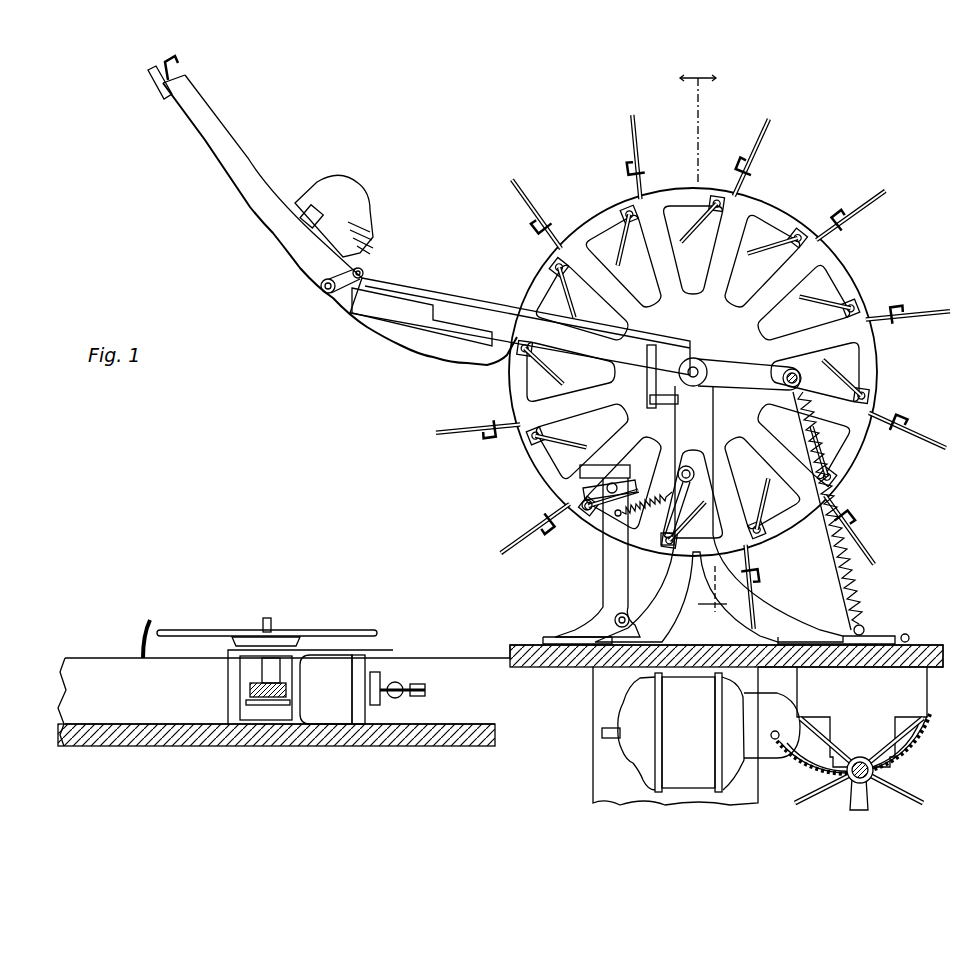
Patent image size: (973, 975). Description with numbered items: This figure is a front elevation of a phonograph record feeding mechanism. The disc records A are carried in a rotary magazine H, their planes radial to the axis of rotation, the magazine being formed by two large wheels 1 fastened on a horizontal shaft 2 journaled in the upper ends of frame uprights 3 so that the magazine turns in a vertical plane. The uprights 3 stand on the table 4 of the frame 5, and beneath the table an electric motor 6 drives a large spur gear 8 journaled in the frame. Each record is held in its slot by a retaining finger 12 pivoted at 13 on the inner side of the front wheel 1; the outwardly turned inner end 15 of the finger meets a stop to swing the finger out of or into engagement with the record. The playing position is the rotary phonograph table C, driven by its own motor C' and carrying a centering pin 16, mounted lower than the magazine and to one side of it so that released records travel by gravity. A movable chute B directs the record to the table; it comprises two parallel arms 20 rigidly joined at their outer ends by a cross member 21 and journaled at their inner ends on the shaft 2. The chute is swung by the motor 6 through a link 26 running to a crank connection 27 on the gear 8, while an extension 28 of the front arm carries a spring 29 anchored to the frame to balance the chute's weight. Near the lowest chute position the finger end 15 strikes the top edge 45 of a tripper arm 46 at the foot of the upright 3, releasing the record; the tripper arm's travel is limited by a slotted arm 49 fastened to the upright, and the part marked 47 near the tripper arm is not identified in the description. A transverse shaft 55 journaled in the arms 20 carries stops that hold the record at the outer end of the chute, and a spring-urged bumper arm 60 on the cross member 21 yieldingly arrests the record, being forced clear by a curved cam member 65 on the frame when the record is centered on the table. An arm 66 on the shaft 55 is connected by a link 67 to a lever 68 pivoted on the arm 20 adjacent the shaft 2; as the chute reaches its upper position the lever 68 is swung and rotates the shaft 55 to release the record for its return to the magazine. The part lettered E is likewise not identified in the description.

The magazine wheel 1 is at (858, 292).
The horizontal shaft 2 is at (695, 360).
The frame upright 3 is at (702, 408).
The table 4 is at (900, 636).
The frame 5 is at (519, 726).
The electric motor 6 is at (701, 422).
The large spur gear 8 is at (930, 738).
The retaining finger 12 is at (545, 236).
The pivot 13 is at (553, 268).
The inner end of finger 15 is at (578, 310).
The centering pin 16 is at (270, 618).
The chute arm 20 is at (246, 188).
The cross member 21 is at (155, 92).
The link 26 is at (836, 790).
The crank connection 27 is at (870, 802).
The arm extension 28 is at (742, 367).
The spring 29 is at (850, 588).
The top edge of tripper arm 45 is at (622, 446).
The tripper arm 46 is at (605, 551).
The link 47 is at (660, 506).
The arm 49 is at (691, 450).
The transverse shaft 55 is at (326, 294).
The bumper arm 60 is at (186, 66).
The cam member 65 is at (140, 628).
The arm 66 is at (340, 270).
The link 67 is at (468, 274).
The lever 68 is at (648, 382).
The disc record A is at (764, 130).
The chute B is at (340, 224).
The phonograph table C is at (260, 650).
The driving motor C' is at (362, 689).
The block E is at (334, 216).
The rotary magazine H is at (693, 372).